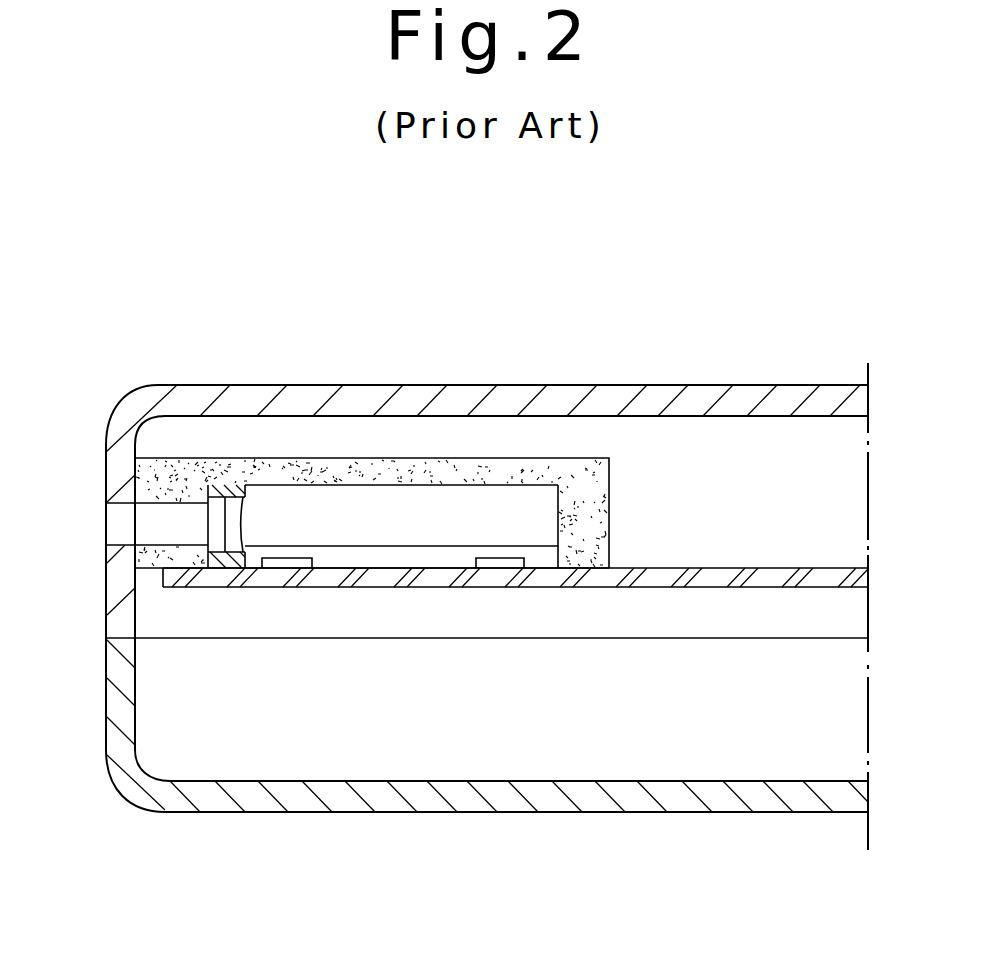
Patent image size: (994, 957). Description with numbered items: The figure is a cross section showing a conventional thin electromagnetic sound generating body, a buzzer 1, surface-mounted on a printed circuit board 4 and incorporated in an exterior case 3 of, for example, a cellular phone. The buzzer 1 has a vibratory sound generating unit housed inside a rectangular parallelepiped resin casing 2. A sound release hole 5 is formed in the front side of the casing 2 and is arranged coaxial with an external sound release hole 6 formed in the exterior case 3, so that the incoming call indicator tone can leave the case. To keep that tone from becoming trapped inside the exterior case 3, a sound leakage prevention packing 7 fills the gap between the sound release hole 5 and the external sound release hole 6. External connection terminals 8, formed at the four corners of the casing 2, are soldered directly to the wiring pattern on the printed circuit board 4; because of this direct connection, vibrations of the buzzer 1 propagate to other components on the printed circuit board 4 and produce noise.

The buzzer 1 is at (392, 476).
The resin casing 2 is at (461, 508).
The exterior case 3 is at (708, 386).
The printed circuit board 4 is at (722, 567).
The sound release hole 5 is at (212, 526).
The external sound release hole 6 is at (115, 528).
The sound leakage prevention packing 7 is at (540, 468).
The external connection terminals 8 is at (281, 566).